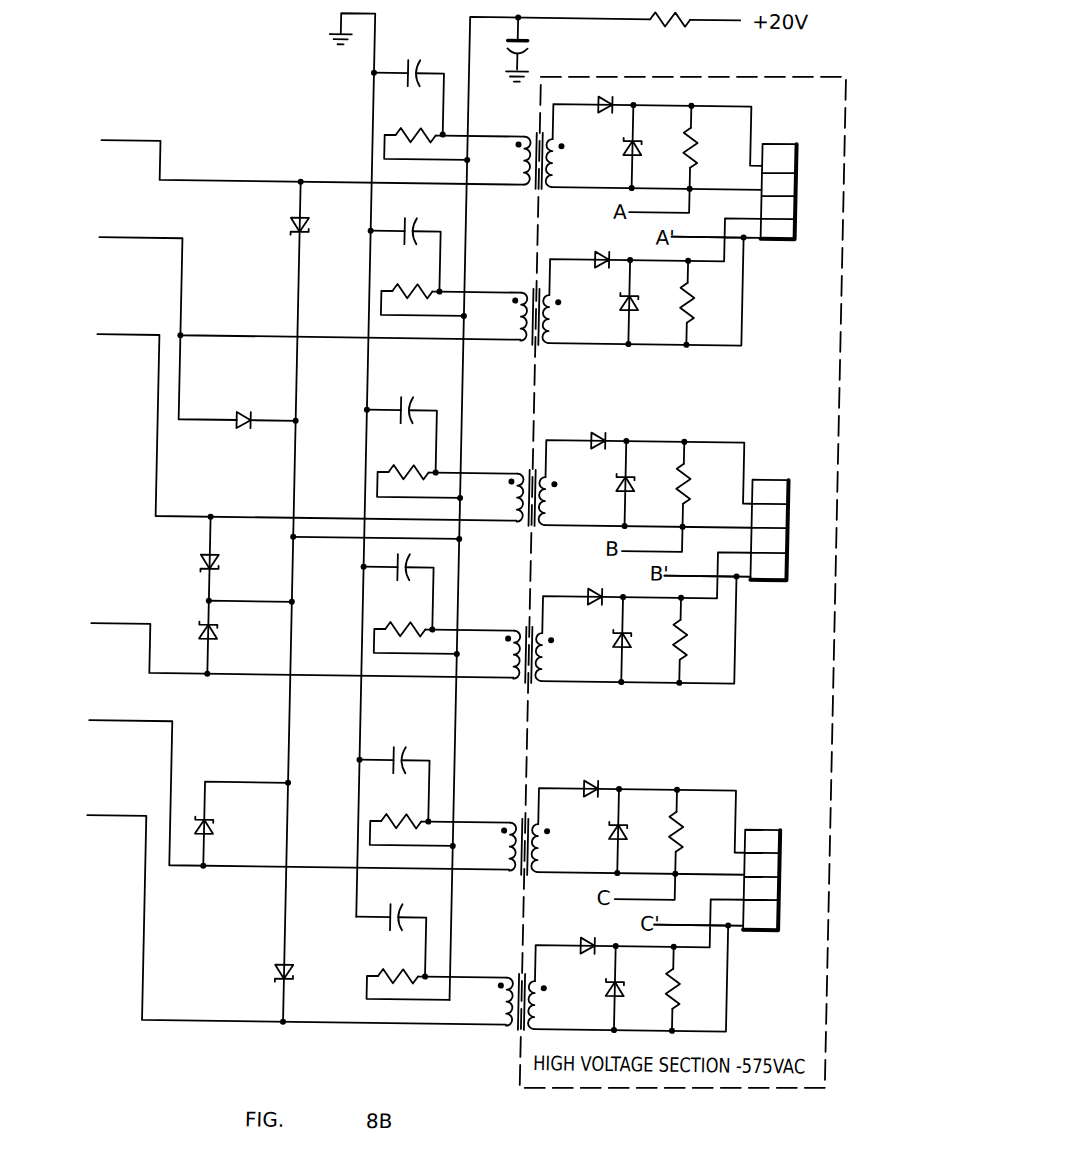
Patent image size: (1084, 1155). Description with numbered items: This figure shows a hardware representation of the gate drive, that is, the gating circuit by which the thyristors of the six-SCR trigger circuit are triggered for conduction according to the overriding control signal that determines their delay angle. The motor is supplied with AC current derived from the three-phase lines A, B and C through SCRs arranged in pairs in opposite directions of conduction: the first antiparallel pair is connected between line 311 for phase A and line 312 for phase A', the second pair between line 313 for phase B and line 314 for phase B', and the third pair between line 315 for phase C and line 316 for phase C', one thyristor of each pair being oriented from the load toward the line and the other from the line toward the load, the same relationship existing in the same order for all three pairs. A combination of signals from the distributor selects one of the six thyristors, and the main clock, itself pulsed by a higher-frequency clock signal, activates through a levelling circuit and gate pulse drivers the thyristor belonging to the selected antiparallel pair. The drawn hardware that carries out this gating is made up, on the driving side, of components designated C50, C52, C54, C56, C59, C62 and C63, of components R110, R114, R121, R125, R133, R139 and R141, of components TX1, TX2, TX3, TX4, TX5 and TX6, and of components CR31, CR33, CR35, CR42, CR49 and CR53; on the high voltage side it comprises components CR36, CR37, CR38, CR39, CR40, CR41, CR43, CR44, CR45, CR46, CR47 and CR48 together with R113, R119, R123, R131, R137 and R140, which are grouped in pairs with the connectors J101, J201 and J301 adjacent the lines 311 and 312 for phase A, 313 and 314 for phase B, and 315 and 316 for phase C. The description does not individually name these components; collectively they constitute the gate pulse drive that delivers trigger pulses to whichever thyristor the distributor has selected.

The capacitor C50 is at (543, 50).
The capacitor C52 is at (402, 64).
The capacitor C54 is at (414, 230).
The capacitor C56 is at (402, 396).
The capacitor C59 is at (398, 556).
The capacitor C62 is at (410, 751).
The capacitor C63 is at (408, 908).
The resistor R110 is at (673, 28).
The resistor R114 is at (395, 132).
The resistor R121 is at (395, 288).
The resistor R125 is at (395, 467).
The resistor R133 is at (395, 626).
The resistor R139 is at (420, 812).
The resistor R141 is at (392, 966).
The resistor R113 is at (690, 152).
The resistor R119 is at (692, 306).
The resistor R123 is at (688, 484).
The resistor R131 is at (688, 640).
The resistor R137 is at (688, 834).
The resistor R140 is at (688, 987).
The pulse transformer TX1 is at (520, 192).
The pulse transformer TX2 is at (519, 352).
The pulse transformer TX3 is at (526, 528).
The pulse transformer TX4 is at (523, 685).
The pulse transformer TX5 is at (527, 870).
The pulse transformer TX6 is at (520, 1038).
The diode CR31 is at (235, 417).
The zener diode CR33 is at (218, 573).
The zener diode CR35 is at (217, 633).
The zener diode CR42 is at (280, 229).
The zener diode CR49 is at (217, 828).
The zener diode CR53 is at (280, 966).
The diode CR36 is at (600, 92).
The zener diode CR37 is at (615, 153).
The diode CR38 is at (600, 239).
The zener diode CR39 is at (615, 298).
The diode CR40 is at (601, 431).
The zener diode CR41 is at (615, 483).
The diode CR43 is at (595, 589).
The zener diode CR44 is at (615, 644).
The diode CR45 is at (589, 782).
The zener diode CR46 is at (615, 834).
The diode CR47 is at (596, 938).
The zener diode CR48 is at (615, 991).
The connector to SCR pair A J101 is at (802, 178).
The connector to SCR pair B J201 is at (791, 517).
The connector to SCR pair C J301 is at (783, 867).
The line for phase A 311 is at (632, 209).
The line for phase A' 312 is at (674, 233).
The line for phase B 313 is at (631, 547).
The line for phase B' 314 is at (676, 572).
The line for phase C 315 is at (630, 895).
The line for phase C' 316 is at (679, 919).